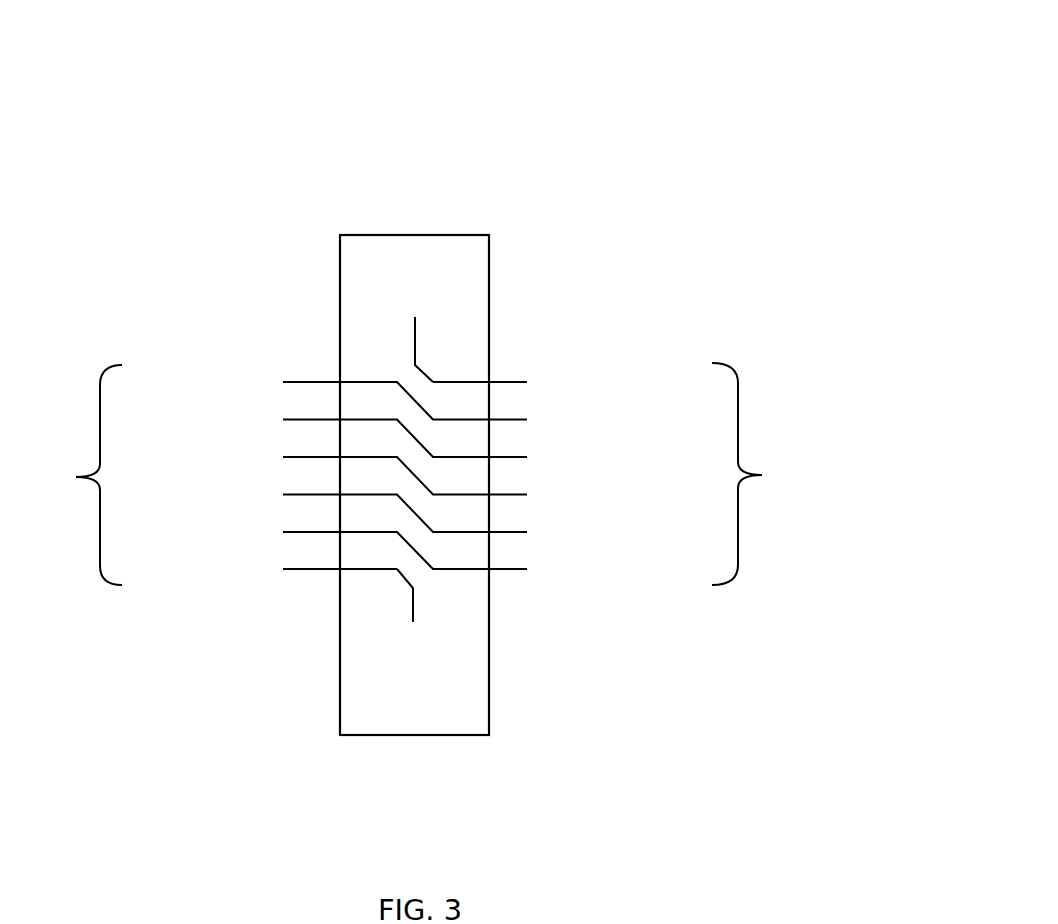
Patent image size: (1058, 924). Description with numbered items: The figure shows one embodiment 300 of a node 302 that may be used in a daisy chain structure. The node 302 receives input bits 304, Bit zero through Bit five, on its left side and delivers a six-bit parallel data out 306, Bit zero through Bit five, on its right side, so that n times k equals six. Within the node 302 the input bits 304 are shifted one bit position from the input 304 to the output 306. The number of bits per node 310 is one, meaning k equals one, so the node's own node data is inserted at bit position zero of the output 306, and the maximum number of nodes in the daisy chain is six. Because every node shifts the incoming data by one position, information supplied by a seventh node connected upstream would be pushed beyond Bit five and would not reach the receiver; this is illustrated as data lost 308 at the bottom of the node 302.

The embodiment of a node 300 is at (628, 55).
The node 302 is at (470, 719).
The input bits 304 is at (143, 475).
The parallel data out 306 is at (695, 474).
The data lost 308 is at (400, 613).
The number of bits per node 310 is at (415, 347).